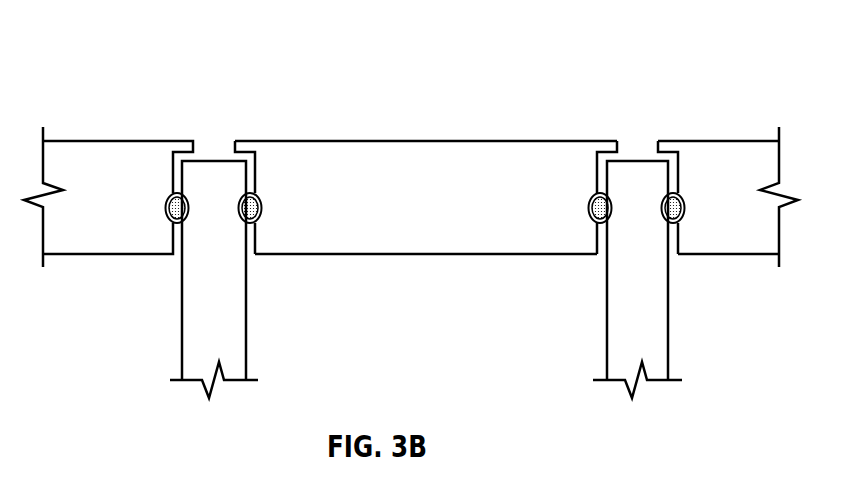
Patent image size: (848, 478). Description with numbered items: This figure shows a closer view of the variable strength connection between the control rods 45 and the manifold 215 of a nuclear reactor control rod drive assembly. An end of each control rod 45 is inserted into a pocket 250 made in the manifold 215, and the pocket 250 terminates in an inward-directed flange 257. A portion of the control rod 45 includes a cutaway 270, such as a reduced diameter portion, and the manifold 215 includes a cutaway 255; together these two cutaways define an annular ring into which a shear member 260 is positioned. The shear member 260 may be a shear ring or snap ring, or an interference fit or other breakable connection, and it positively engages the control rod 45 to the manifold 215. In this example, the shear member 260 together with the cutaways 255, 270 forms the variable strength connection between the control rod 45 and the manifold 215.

The manifold 215 is at (423, 256).
The control rod 45 is at (247, 317).
The pocket 250 is at (258, 173).
The cutaway 255 is at (262, 210).
The inward-directed flange 257 is at (659, 143).
The shear member 260 is at (176, 193).
The cutaway 270 is at (189, 210).